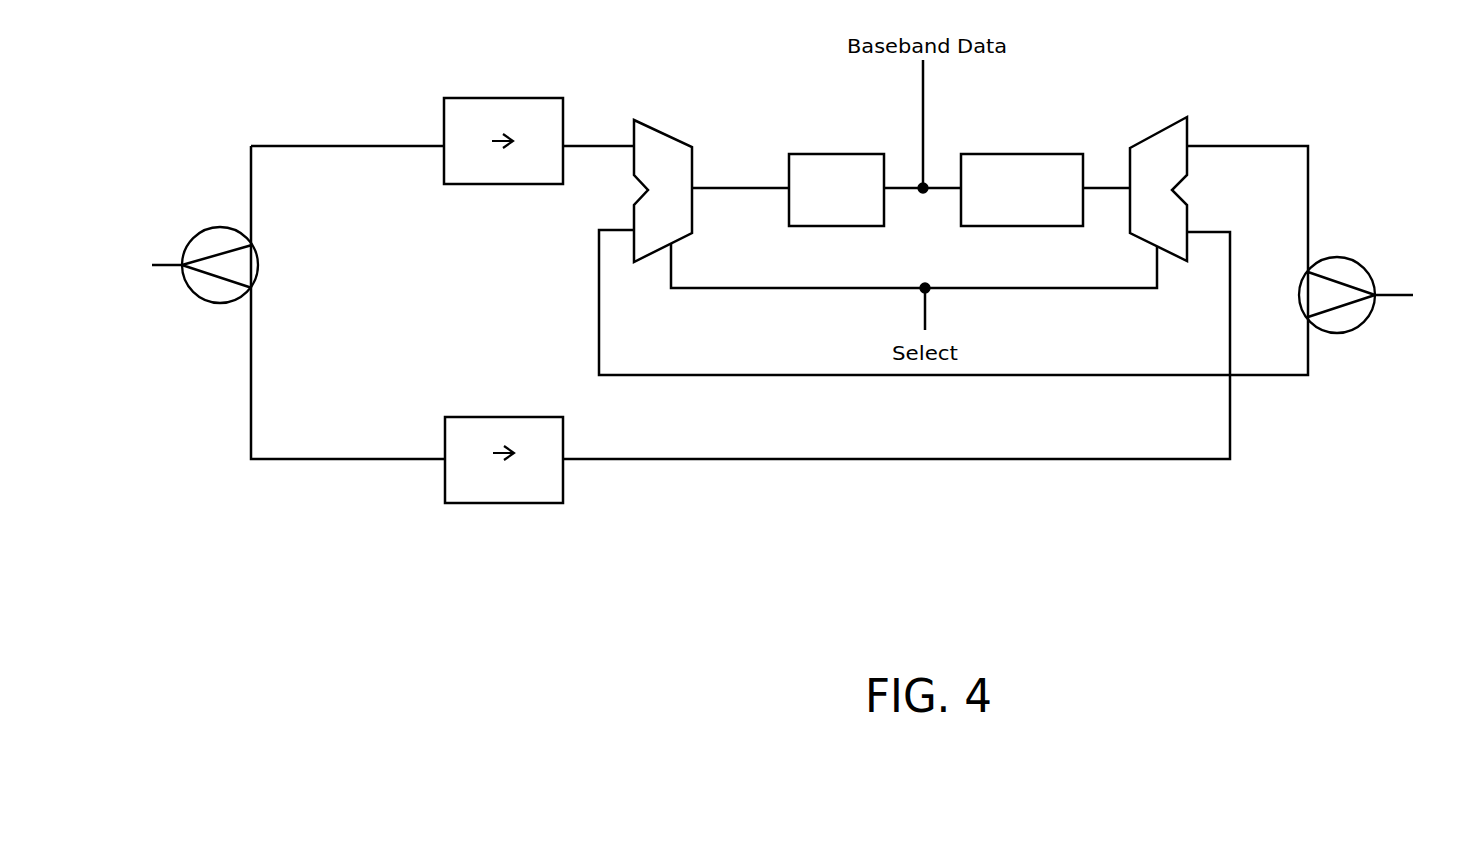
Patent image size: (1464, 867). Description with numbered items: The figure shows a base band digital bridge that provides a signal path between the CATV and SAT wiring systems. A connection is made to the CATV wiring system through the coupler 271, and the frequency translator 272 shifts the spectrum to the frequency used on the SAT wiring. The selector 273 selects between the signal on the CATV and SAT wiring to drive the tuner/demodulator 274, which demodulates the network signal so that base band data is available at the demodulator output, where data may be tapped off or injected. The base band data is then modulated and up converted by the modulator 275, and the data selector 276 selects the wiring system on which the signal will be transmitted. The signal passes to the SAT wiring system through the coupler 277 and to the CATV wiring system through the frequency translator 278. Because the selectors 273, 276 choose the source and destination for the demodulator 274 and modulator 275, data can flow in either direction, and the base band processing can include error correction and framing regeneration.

The coupler 271 is at (214, 224).
The frequency translator 272 is at (518, 96).
The selector 273 is at (672, 130).
The tuner/demodulator 274 is at (840, 151).
The modulator 275 is at (1045, 152).
The data selector 276 is at (1153, 132).
The coupler 277 is at (1363, 262).
The frequency translator 278 is at (507, 414).